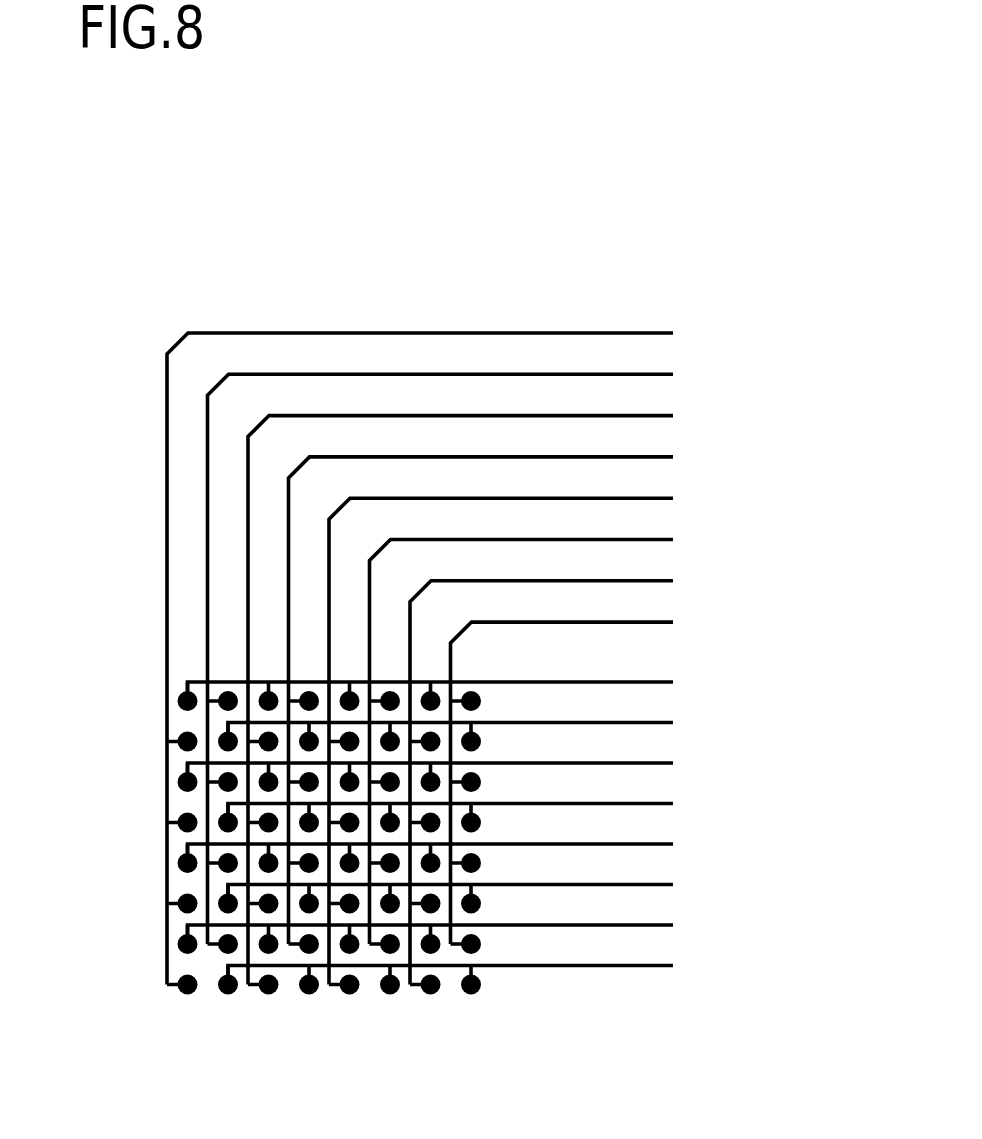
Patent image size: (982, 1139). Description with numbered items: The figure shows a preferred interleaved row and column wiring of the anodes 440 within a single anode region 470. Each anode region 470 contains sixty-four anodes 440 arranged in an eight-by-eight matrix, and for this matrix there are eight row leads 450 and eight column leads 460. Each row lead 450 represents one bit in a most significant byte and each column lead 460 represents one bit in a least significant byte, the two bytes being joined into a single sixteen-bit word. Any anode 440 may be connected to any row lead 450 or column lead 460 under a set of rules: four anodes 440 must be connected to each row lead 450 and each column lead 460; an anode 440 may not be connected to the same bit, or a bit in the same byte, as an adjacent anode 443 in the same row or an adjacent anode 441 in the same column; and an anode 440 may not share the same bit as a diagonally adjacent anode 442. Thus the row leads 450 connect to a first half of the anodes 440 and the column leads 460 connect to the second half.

The anode region 470 is at (80, 580).
The column leads 460 is at (633, 334).
The row leads 450 is at (625, 681).
The anode 440 is at (187, 997).
The adjacent anode in the same column 441 is at (183, 953).
The diagonally adjacent anode 442 is at (223, 955).
The adjacent anode in the same row 443 is at (230, 997).